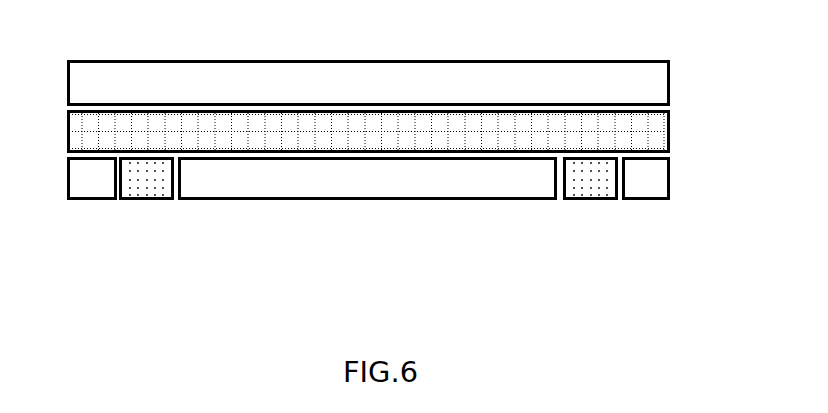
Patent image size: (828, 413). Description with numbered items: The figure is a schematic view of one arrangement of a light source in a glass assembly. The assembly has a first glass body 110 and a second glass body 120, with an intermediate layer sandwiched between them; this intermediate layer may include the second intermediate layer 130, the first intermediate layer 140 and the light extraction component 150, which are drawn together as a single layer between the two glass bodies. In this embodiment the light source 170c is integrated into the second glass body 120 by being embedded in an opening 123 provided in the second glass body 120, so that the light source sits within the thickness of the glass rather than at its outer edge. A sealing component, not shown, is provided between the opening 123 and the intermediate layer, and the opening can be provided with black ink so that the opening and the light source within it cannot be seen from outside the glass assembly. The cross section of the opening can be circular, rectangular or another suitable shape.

The first glass body 110 is at (290, 77).
The second glass body 120 is at (403, 183).
The opening 123 is at (178, 200).
The second intermediate layer 130 is at (396, 86).
The first intermediate layer 140 is at (369, 132).
The light extraction component 150 is at (455, 132).
The light source 170c is at (150, 184).